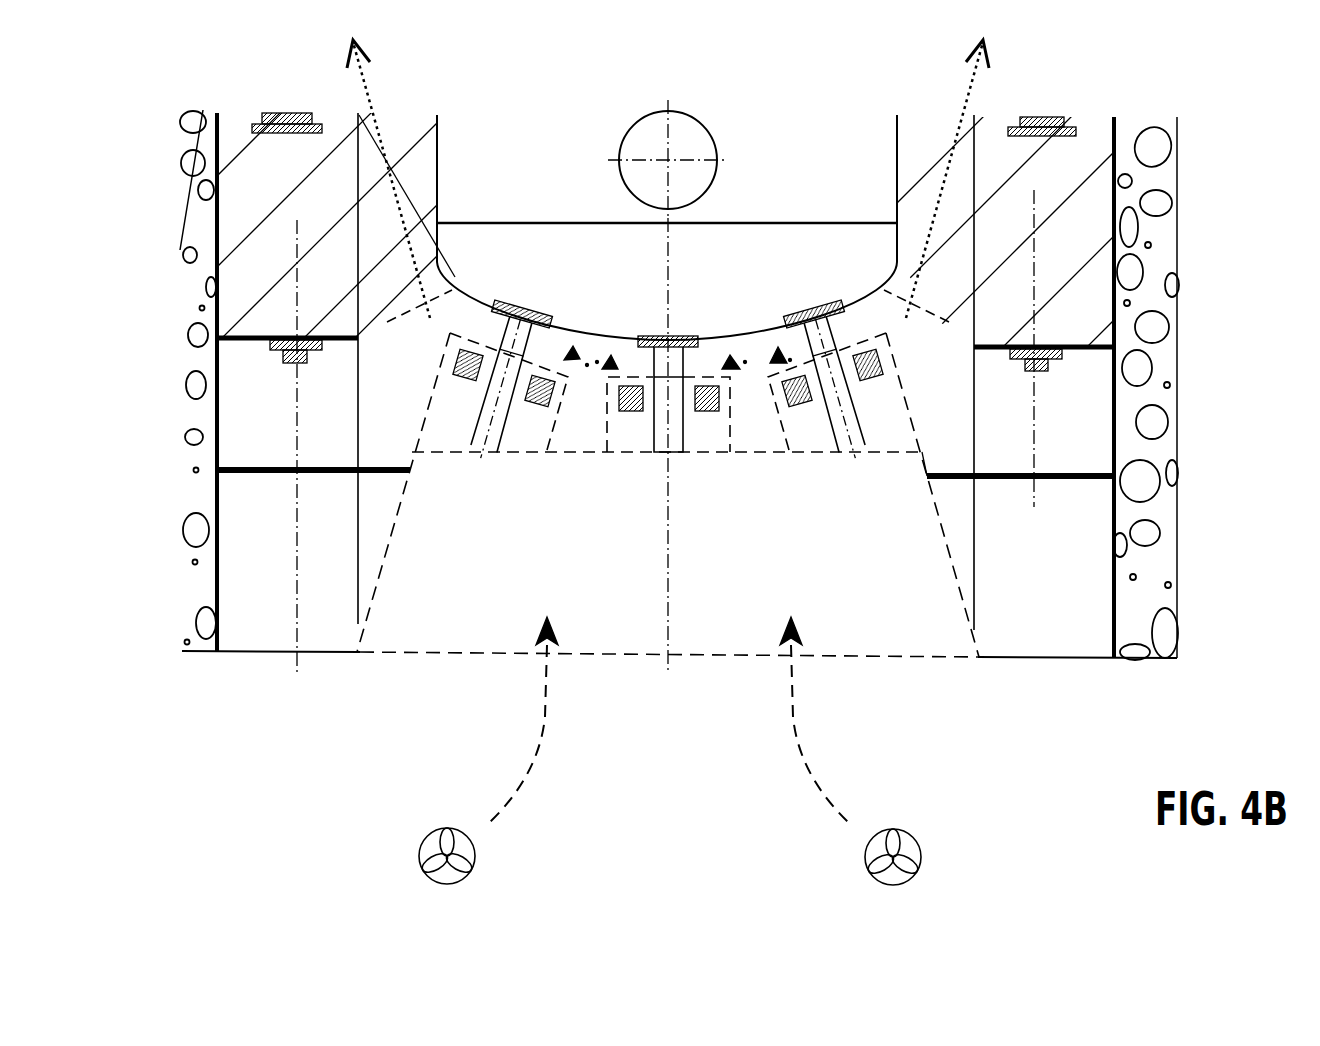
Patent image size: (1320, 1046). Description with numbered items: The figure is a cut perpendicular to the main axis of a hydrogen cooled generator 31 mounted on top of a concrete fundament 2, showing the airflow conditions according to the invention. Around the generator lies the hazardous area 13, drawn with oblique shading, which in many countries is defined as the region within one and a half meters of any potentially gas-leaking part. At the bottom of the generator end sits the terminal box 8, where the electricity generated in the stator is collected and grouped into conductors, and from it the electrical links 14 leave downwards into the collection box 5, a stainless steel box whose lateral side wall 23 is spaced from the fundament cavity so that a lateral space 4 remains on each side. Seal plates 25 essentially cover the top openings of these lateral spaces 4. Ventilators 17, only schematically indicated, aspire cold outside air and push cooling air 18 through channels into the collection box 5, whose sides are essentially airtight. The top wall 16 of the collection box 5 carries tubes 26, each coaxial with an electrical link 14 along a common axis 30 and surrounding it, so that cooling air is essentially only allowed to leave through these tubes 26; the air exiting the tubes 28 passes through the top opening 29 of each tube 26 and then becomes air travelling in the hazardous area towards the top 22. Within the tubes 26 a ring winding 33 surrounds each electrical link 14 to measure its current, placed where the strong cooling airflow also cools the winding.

The fundament 2 is at (200, 493).
The lateral space 4 is at (279, 579).
The collection box 5 is at (934, 622).
The terminal box 8 is at (786, 286).
The hazardous area 13 is at (292, 285).
The electrical links 14 is at (490, 437).
The top wall of collection box 16 is at (551, 448).
The ventilators 17 is at (475, 855).
The cooling air 18 is at (544, 710).
The air travelling in hazardous area towards the top 22 is at (437, 175).
The lateral side wall of collection box 23 is at (410, 475).
The seal plate 25 is at (257, 477).
The tubes 26 is at (452, 382).
The air exiting tubes 28 is at (609, 357).
The top opening of tube 29 is at (547, 370).
The axis of electrical link and tube 30 is at (518, 302).
The generator 31 is at (688, 60).
The ring winding 33 is at (455, 362).